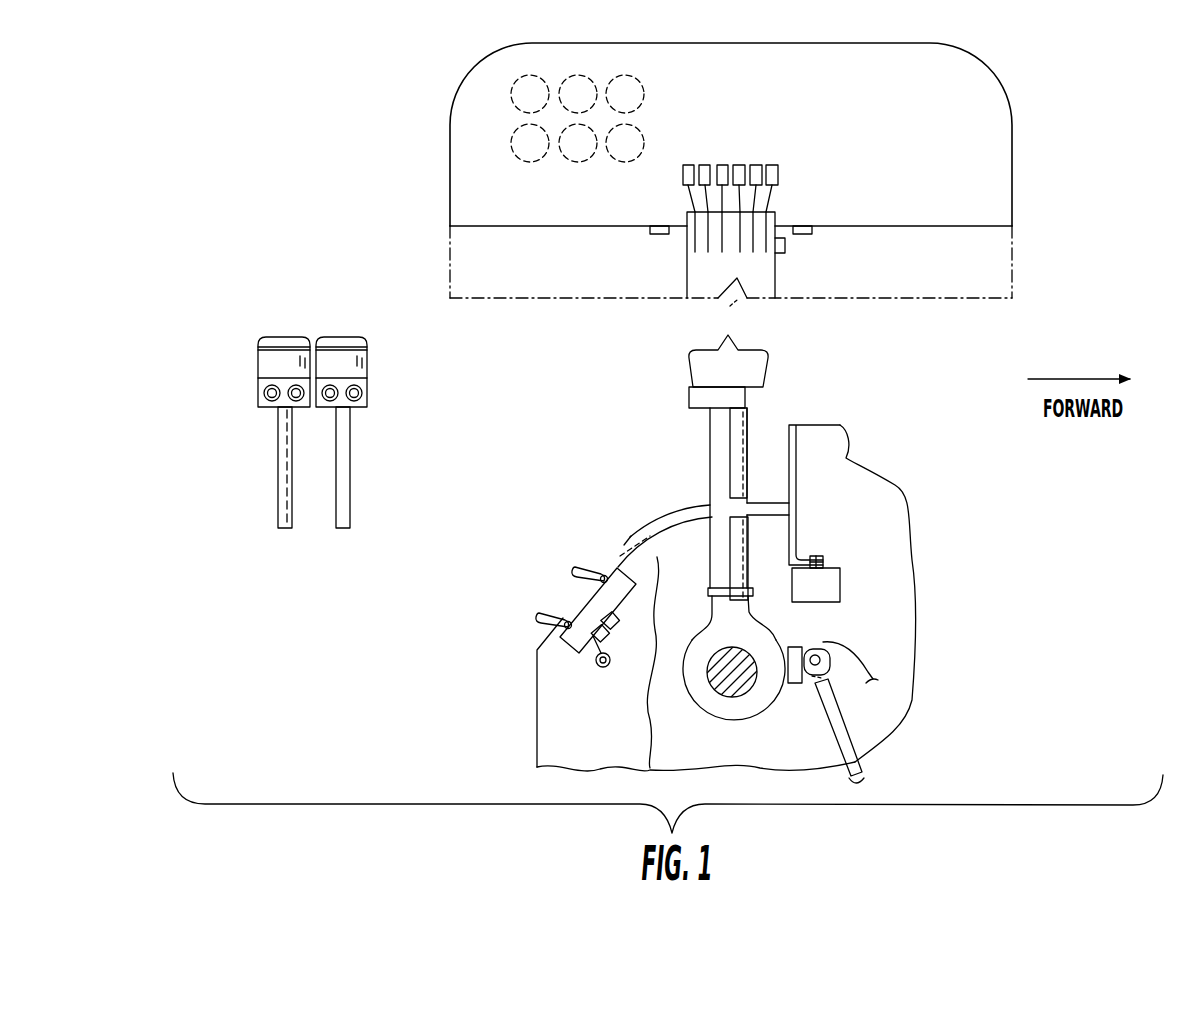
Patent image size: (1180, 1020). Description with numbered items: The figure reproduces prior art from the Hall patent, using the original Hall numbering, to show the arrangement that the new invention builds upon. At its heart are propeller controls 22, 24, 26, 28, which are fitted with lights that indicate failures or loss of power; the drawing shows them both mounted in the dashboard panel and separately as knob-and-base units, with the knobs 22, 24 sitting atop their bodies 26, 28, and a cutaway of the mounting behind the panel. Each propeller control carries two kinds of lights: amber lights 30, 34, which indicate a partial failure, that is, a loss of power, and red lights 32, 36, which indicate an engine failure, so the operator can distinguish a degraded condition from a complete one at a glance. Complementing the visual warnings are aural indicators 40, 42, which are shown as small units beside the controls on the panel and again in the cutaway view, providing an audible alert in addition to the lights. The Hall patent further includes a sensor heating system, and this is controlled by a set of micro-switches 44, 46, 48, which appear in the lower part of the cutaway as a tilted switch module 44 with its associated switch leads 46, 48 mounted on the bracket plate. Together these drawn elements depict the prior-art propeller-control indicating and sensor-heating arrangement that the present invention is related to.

The propeller control 22 is at (720, 162).
The propeller control 24 is at (741, 162).
The propeller control 26 is at (256, 401).
The propeller control 28 is at (369, 401).
The amber light 30 is at (262, 395).
The red light 32 is at (286, 407).
The amber light 34 is at (341, 407).
The red light 36 is at (363, 395).
The aural indicator 40 is at (656, 237).
The aural indicator 42 is at (805, 237).
The micro-switch 44 is at (562, 650).
The micro-switch 46 is at (577, 567).
The micro-switch 48 is at (539, 614).